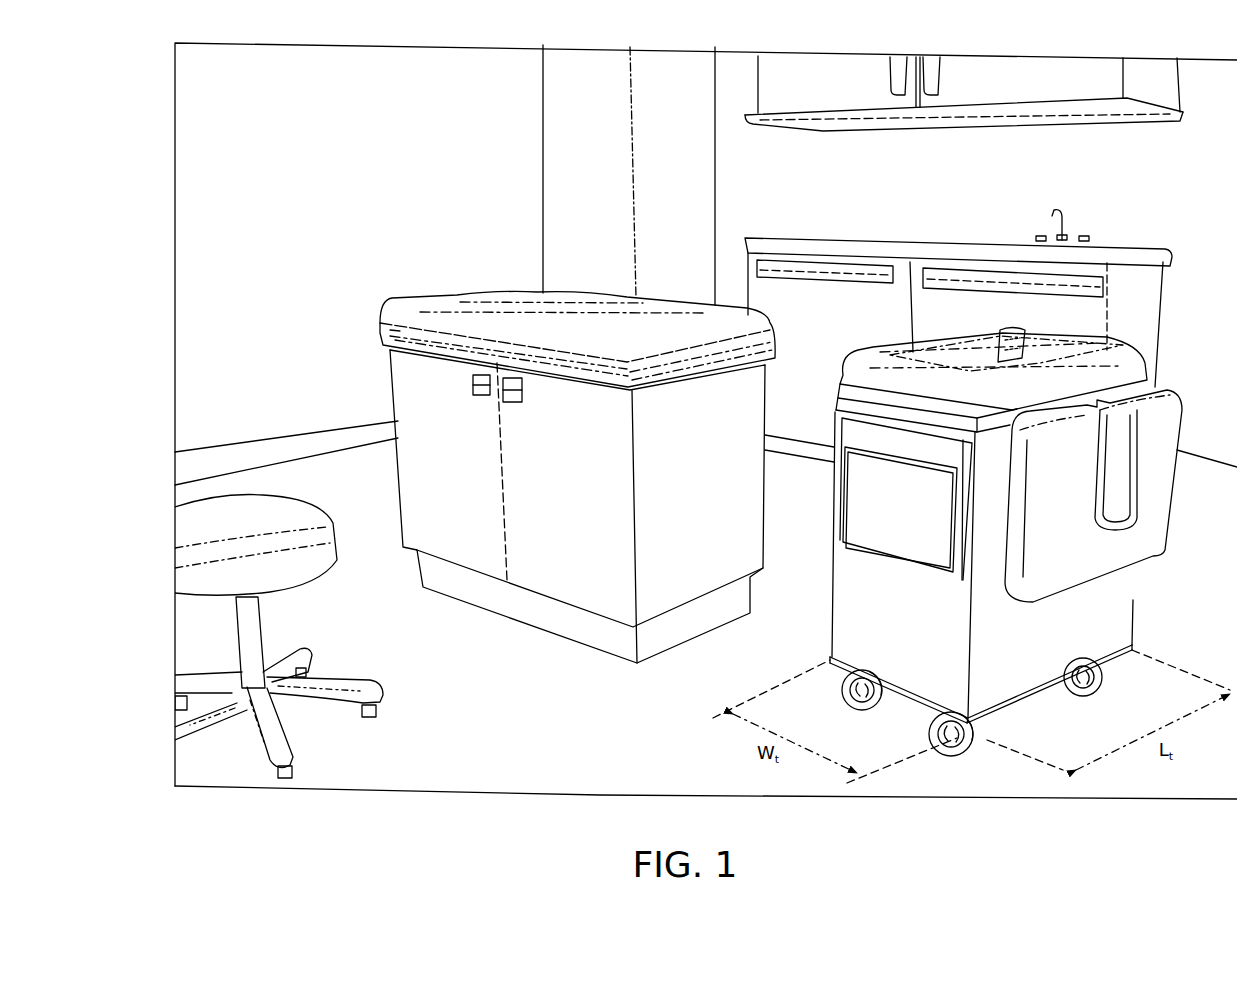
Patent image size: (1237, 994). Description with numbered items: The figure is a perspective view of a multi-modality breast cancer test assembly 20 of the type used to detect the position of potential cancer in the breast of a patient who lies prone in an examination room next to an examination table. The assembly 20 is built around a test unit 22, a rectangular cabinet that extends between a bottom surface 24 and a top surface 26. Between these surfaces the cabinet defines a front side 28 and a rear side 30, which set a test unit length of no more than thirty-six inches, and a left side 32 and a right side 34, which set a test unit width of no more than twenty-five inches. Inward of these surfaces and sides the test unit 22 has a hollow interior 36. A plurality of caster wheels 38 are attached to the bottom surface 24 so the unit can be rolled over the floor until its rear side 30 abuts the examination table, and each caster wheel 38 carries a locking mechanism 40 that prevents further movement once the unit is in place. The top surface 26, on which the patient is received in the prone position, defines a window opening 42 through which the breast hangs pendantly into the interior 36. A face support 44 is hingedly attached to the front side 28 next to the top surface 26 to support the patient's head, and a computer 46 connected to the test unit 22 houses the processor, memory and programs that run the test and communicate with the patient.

The multi-modality breast cancer test assembly 20 is at (999, 538).
The test unit 22 is at (984, 567).
The bottom surface 24 is at (954, 720).
The top surface 26 is at (1117, 352).
The front side 28 is at (1133, 632).
The rear side 30 is at (832, 583).
The left side 32 is at (1137, 580).
The right side 34 is at (833, 628).
The interior 36 is at (982, 360).
The caster wheels 38 is at (973, 747).
The locking mechanism 40 is at (862, 690).
The window opening 42 is at (1003, 350).
The face support 44 is at (1175, 527).
The computer 46 is at (847, 497).